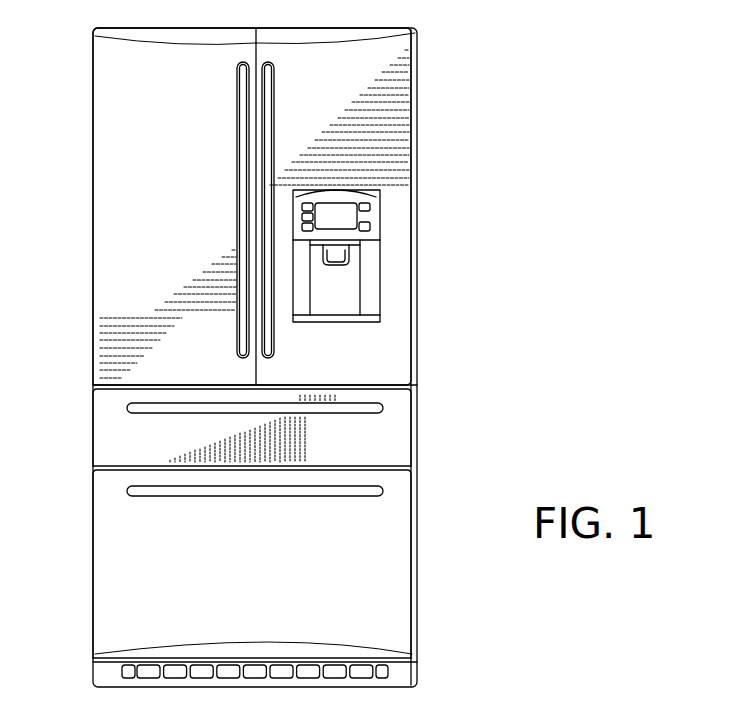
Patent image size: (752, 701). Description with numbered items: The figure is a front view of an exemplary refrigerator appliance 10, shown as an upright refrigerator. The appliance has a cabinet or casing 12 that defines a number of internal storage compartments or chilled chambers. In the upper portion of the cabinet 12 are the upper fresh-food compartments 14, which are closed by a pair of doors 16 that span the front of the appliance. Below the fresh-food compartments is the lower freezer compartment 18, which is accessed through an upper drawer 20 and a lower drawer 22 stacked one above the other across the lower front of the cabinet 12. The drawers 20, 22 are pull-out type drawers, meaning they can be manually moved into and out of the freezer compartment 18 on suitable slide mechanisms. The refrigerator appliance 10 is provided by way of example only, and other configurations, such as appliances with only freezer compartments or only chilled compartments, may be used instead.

The refrigerator appliance 10 is at (328, 357).
The cabinet or casing 12 is at (418, 296).
The upper fresh-food compartments 14 is at (127, 182).
The doors 16 is at (160, 265).
The lower freezer compartment 18 is at (293, 521).
The upper drawer 20 is at (150, 458).
The lower drawer 22 is at (274, 584).